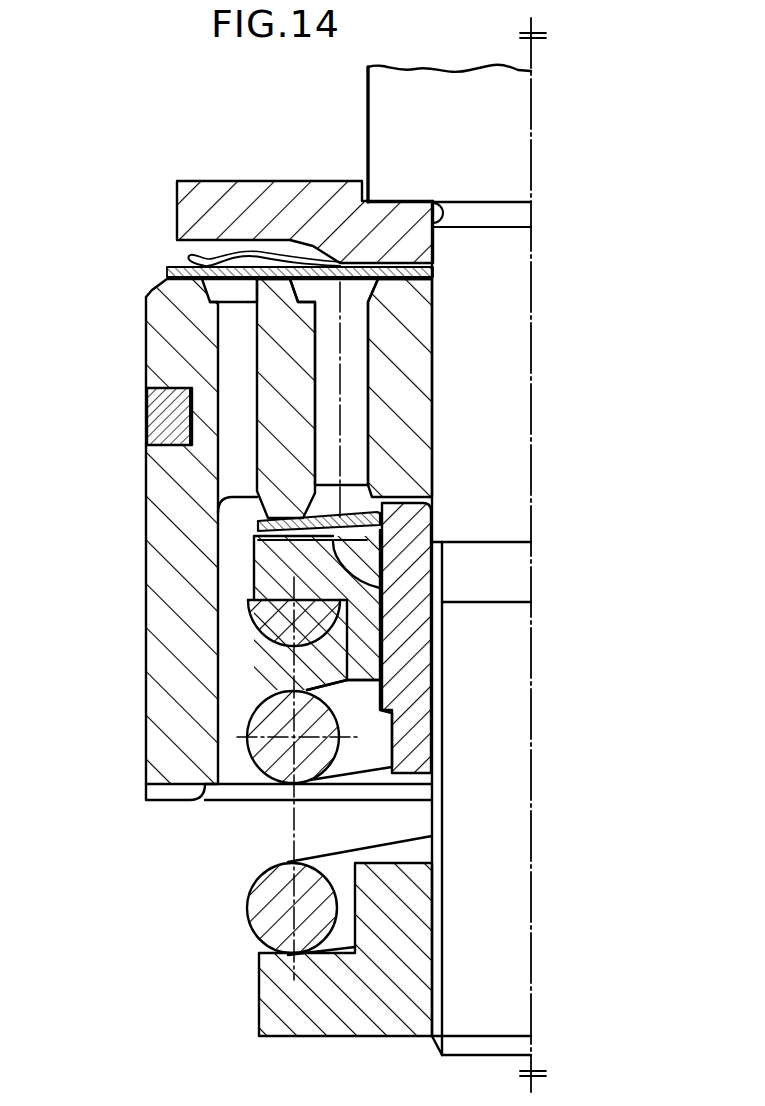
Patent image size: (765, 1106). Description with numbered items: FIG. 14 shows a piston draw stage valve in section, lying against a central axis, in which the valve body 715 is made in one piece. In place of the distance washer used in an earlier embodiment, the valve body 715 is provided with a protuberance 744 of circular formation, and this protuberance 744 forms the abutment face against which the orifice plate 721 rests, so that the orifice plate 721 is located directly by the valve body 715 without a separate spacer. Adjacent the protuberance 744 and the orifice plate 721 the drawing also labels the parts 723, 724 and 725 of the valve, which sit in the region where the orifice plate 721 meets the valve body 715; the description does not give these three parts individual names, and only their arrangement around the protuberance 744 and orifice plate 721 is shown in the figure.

The valve body 715 is at (287, 568).
The orifice plate 721 is at (322, 520).
The retainer 723 is at (428, 597).
The support member 724 is at (335, 542).
The wedge spring 725 is at (285, 537).
The protuberance 744 is at (383, 527).